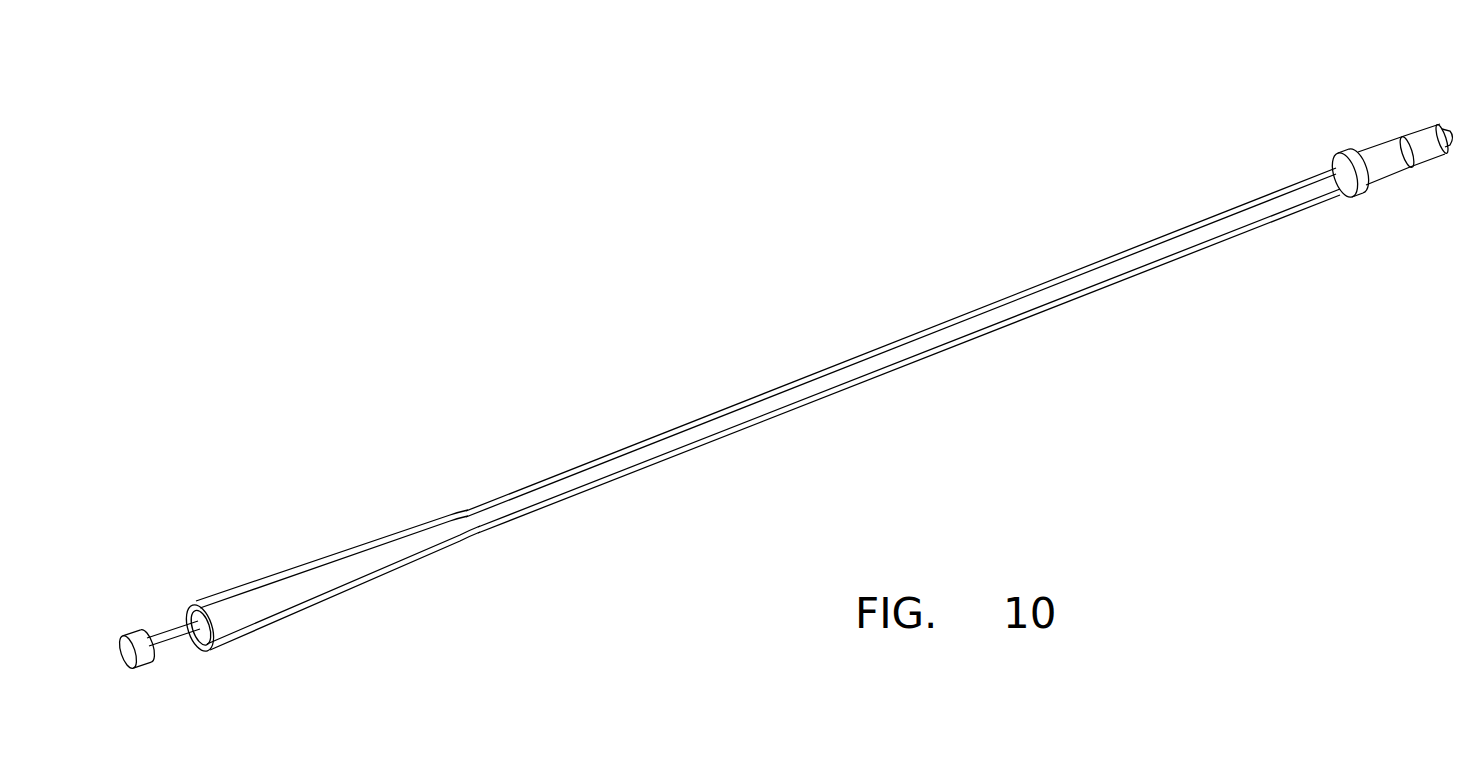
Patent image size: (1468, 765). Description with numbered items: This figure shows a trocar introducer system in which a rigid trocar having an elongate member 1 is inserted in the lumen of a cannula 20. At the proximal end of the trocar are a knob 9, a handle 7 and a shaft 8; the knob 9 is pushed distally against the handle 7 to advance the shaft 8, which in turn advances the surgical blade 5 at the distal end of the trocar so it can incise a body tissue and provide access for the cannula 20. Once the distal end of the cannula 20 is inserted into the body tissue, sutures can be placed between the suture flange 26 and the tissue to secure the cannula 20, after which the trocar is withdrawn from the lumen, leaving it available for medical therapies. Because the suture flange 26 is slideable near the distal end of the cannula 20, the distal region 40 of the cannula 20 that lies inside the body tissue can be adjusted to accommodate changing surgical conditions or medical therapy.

The elongate member 1 is at (815, 387).
The surgical blade 5 is at (1451, 135).
The handle 7 is at (402, 558).
The shaft 8 is at (177, 643).
The knob 9 is at (129, 633).
The cannula 20 is at (895, 338).
The suture flange 26 is at (1340, 148).
The distal region 40 is at (1433, 123).